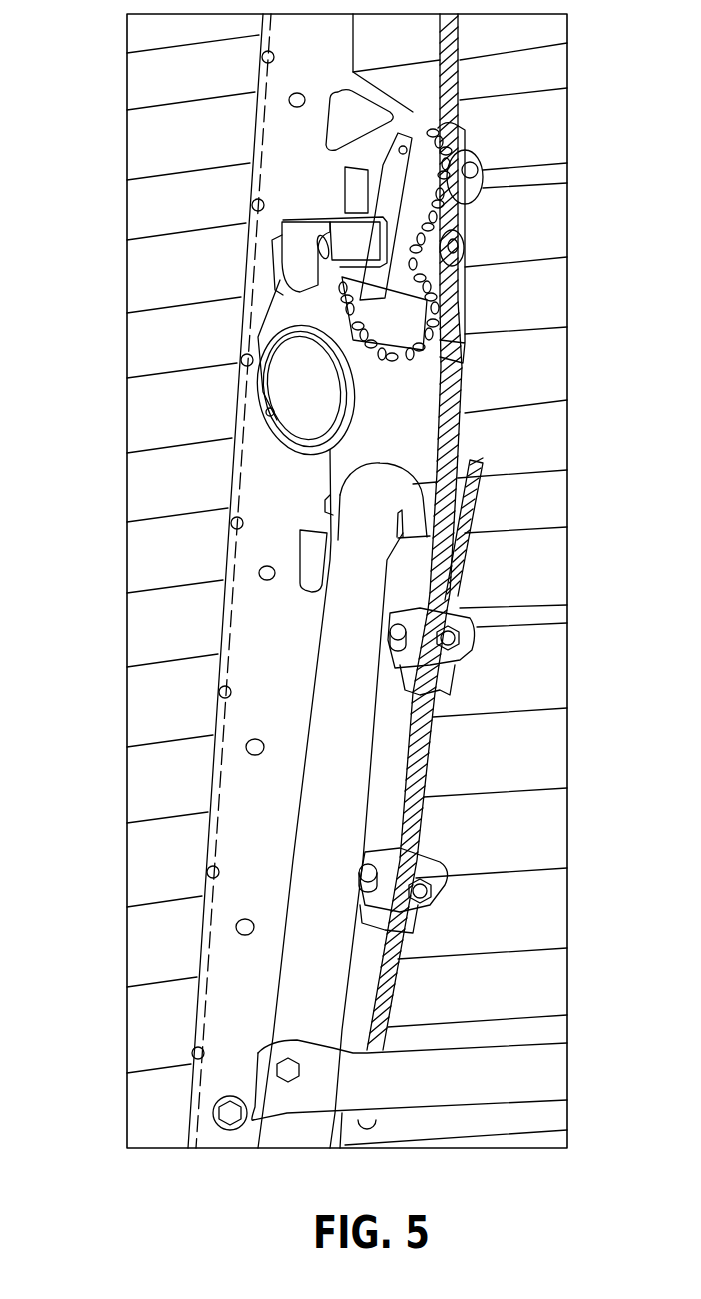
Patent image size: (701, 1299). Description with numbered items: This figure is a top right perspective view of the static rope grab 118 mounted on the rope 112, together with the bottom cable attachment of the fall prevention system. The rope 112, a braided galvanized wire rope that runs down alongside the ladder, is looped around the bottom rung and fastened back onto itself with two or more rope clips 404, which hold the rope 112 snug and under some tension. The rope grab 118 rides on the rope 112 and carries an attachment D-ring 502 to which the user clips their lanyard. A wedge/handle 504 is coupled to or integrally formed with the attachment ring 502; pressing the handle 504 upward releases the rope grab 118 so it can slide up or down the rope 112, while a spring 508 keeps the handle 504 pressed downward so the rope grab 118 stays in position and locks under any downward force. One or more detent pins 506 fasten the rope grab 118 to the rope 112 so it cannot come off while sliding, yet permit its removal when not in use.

The rope 112 is at (463, 440).
The rope grab 118 is at (280, 262).
The rope clips 404 is at (477, 643).
The attachment D-ring 502 is at (257, 338).
The wedge/handle 504 is at (313, 215).
The detent pins 506 is at (453, 228).
The spring 508 is at (428, 310).